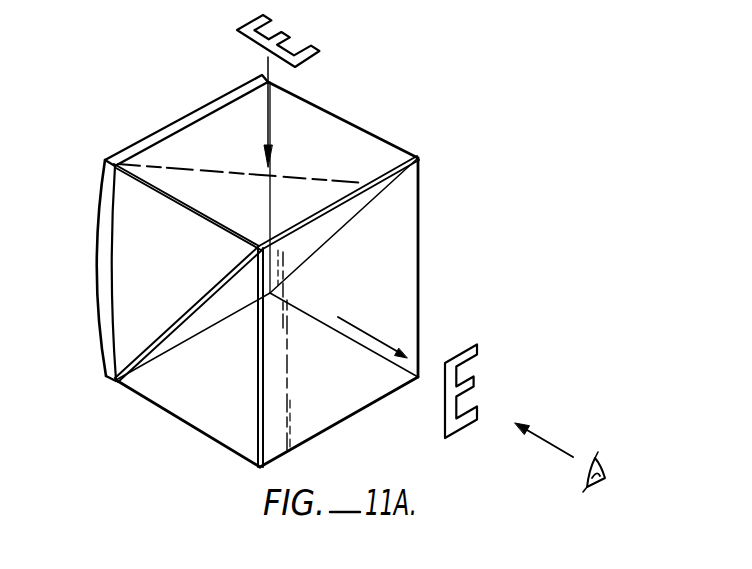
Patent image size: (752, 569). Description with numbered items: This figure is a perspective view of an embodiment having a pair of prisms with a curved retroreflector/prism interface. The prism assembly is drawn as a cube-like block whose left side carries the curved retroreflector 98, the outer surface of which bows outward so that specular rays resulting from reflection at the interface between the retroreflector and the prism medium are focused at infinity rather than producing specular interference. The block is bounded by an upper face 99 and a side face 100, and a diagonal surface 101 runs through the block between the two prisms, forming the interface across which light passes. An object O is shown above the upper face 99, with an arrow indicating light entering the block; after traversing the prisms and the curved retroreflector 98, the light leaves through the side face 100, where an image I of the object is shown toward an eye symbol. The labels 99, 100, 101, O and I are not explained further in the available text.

The curved retroreflector 98 is at (99, 229).
The top entrance face of beam-splitter cube 99 is at (377, 157).
The right exit face of beam-splitter cube 100 is at (404, 243).
The diagonal beam-splitting surface 101 is at (155, 340).
The object O is at (313, 47).
The image I is at (470, 360).